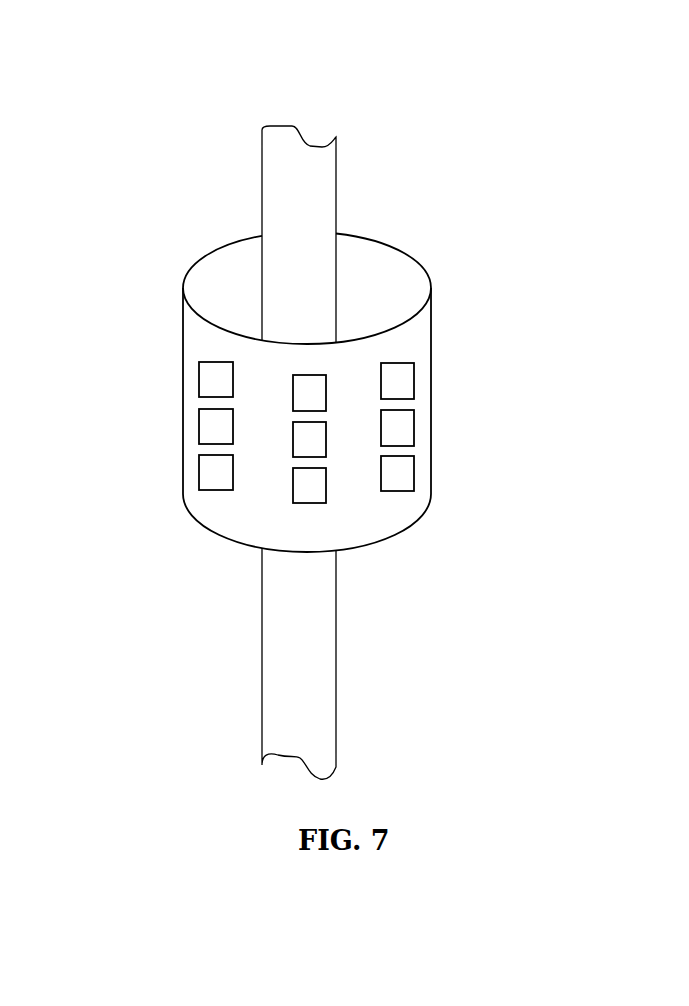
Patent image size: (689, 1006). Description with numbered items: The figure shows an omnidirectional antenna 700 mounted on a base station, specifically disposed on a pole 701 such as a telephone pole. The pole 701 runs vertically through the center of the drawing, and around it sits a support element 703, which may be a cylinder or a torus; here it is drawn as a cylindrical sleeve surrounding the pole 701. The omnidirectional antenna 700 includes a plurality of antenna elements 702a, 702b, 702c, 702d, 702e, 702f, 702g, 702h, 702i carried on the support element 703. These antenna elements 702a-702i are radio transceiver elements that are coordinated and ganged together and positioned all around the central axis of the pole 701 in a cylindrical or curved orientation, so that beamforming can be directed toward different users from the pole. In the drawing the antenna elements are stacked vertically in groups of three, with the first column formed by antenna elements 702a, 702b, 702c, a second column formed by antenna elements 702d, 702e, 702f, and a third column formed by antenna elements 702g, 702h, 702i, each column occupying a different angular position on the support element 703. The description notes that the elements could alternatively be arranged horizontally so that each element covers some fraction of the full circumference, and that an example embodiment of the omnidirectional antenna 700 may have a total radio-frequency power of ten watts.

The omnidirectional antenna 700 is at (142, 80).
The pole 701 is at (263, 215).
The antenna element 702a is at (203, 383).
The antenna element 702b is at (200, 430).
The antenna element 702c is at (200, 477).
The antenna element 702d is at (292, 393).
The antenna element 702e is at (292, 440).
The antenna element 702f is at (292, 487).
The antenna element 702g is at (413, 382).
The antenna element 702h is at (412, 423).
The antenna element 702i is at (407, 477).
The support element 703 is at (183, 333).